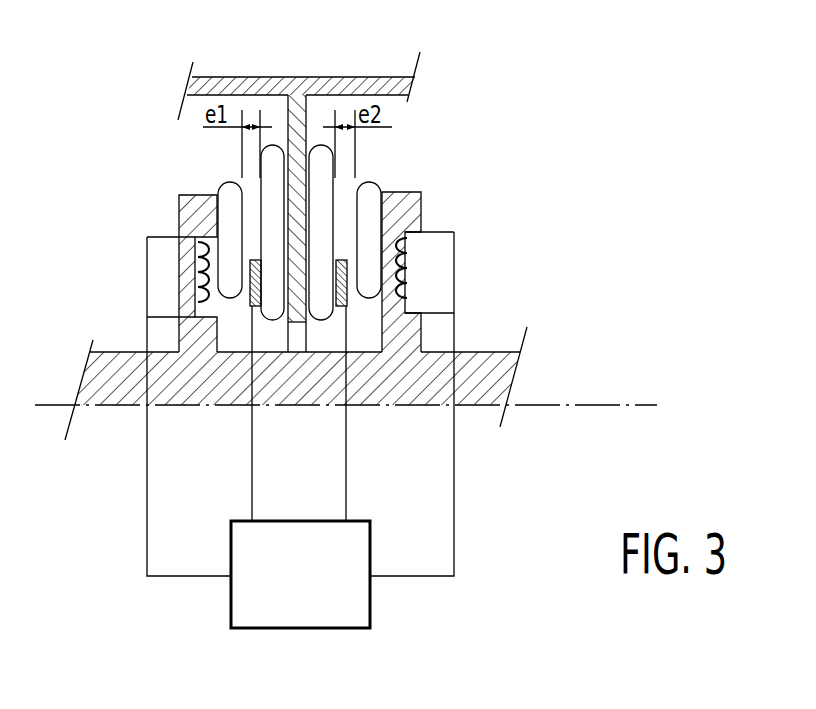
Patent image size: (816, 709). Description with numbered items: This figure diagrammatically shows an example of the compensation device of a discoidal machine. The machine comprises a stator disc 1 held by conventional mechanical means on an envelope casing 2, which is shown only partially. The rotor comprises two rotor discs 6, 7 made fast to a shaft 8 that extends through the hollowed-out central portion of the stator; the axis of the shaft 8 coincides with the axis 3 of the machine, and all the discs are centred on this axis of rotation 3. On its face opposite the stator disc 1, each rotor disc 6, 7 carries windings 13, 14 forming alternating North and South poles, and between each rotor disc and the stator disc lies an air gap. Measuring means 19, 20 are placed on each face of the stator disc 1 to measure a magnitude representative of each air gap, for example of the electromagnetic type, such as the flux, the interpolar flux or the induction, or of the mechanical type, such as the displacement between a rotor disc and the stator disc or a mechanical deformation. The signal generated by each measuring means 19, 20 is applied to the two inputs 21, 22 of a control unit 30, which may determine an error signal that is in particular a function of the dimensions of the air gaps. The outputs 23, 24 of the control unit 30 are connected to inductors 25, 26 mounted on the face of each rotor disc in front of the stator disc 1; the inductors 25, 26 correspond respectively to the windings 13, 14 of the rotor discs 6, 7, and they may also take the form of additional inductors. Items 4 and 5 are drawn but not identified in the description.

The stator disc 1 is at (297, 132).
The envelope casing 2 is at (359, 86).
The axis 3 is at (602, 403).
The left inner bellows 4 is at (262, 165).
The right inner bellows 5 is at (327, 165).
The rotor disc 6 is at (177, 212).
The rotor disc 7 is at (421, 207).
The shaft 8 is at (107, 388).
The winding 13 is at (232, 187).
The winding 14 is at (370, 187).
The measuring means 19 is at (250, 308).
The measuring means 20 is at (347, 310).
The input 21 is at (253, 519).
The input 22 is at (347, 519).
The output 23 is at (231, 578).
The output 24 is at (370, 578).
The inductor 25 is at (205, 278).
The inductor 26 is at (402, 278).
The control unit 30 is at (316, 630).